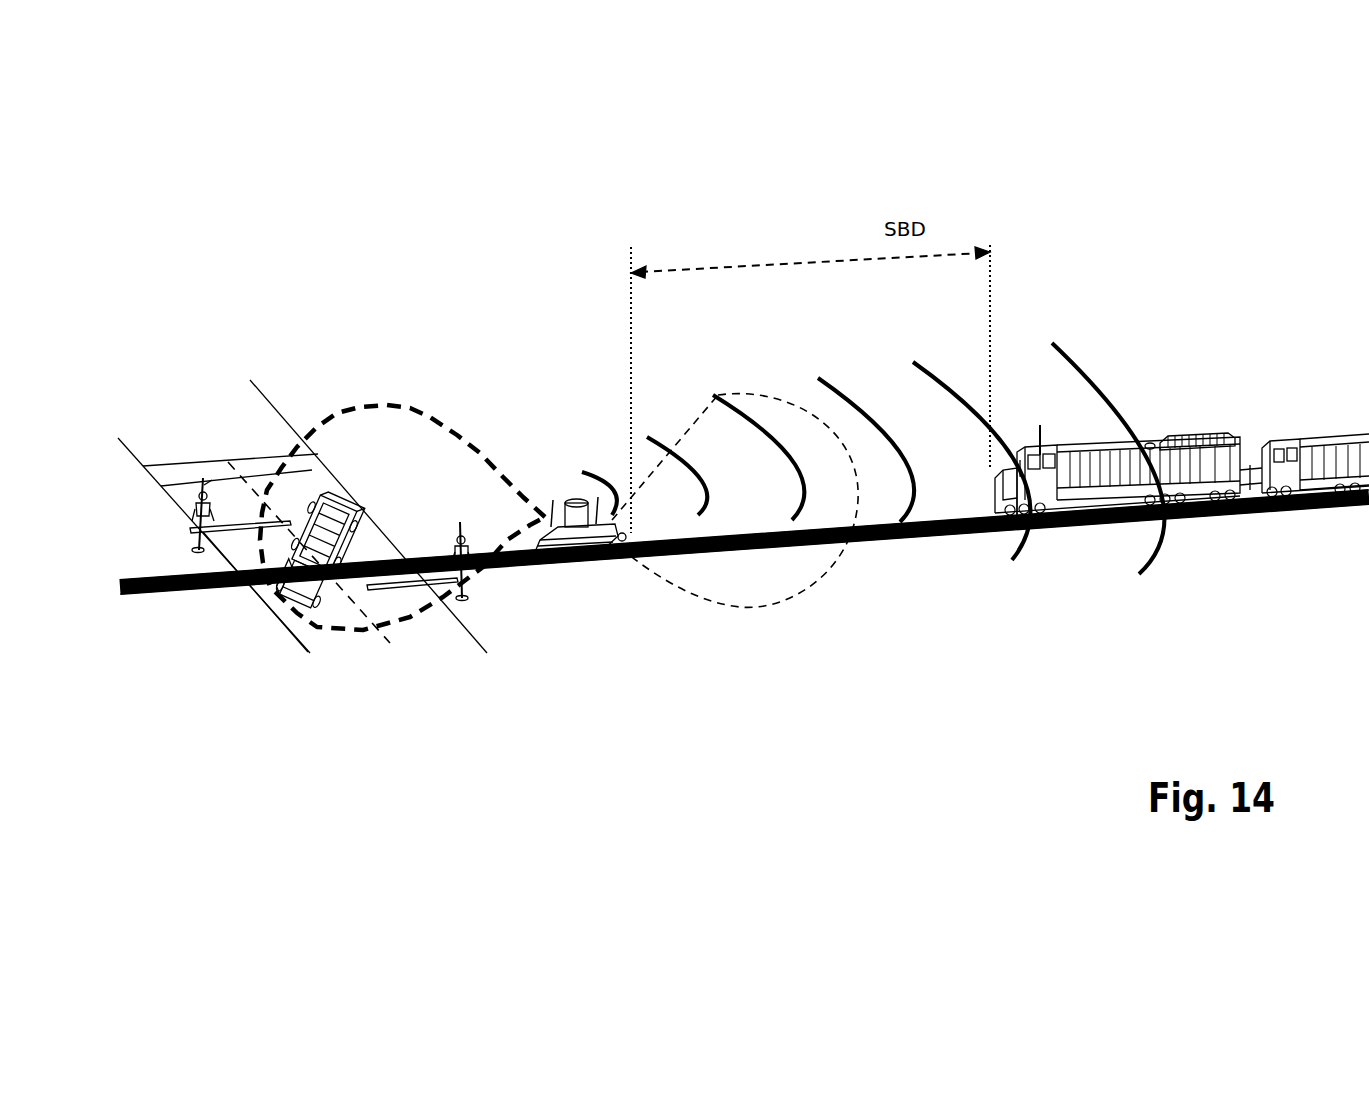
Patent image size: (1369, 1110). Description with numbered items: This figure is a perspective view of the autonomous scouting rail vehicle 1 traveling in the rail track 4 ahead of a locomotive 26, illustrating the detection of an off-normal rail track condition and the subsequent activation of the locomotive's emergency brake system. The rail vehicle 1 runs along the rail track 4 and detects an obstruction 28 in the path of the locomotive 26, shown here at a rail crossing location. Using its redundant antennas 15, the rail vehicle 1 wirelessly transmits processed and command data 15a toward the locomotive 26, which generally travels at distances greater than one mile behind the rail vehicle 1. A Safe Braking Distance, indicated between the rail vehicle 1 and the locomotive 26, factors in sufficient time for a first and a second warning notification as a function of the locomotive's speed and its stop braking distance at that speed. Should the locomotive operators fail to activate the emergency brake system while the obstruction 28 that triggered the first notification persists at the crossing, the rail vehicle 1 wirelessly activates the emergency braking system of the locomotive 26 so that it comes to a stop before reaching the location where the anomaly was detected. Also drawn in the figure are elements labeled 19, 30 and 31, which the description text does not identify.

The autonomous scouting rail vehicle 1 is at (590, 573).
The rail track 4 is at (943, 532).
The redundant antennas 15 is at (553, 503).
The processed and command data 15a is at (865, 392).
The train / locomotive 19 is at (1048, 493).
The locomotive 26 is at (1176, 440).
The obstruction 28 is at (334, 520).
The warning post / signal 30 is at (201, 528).
The rail-mounted element / ground plate 31 is at (230, 522).